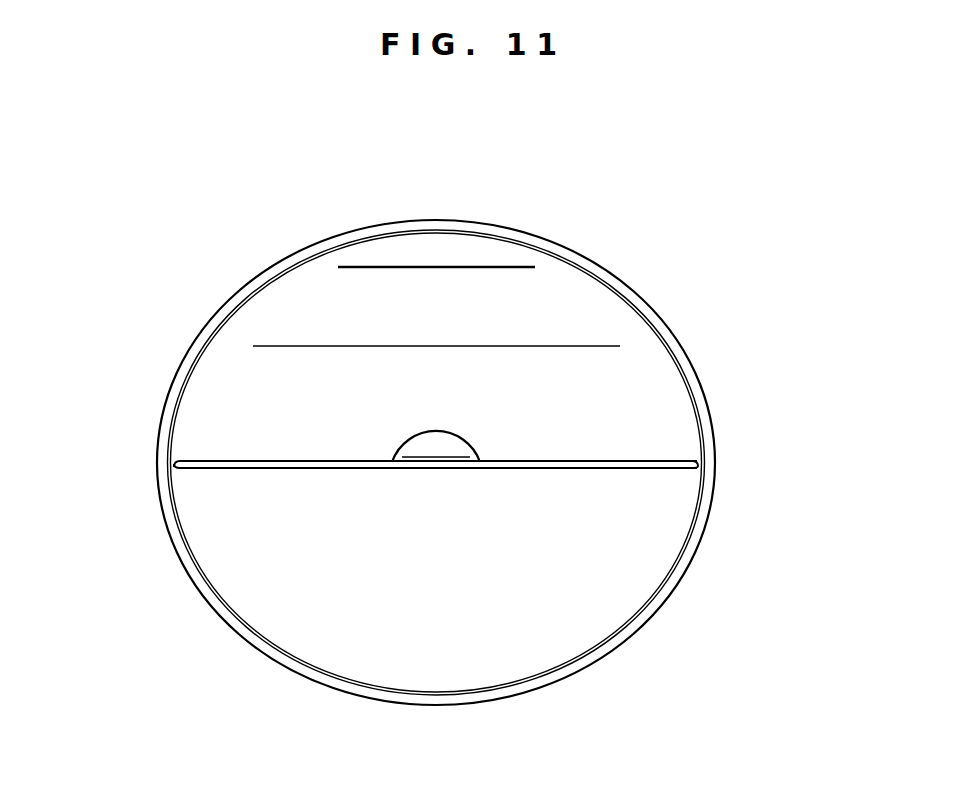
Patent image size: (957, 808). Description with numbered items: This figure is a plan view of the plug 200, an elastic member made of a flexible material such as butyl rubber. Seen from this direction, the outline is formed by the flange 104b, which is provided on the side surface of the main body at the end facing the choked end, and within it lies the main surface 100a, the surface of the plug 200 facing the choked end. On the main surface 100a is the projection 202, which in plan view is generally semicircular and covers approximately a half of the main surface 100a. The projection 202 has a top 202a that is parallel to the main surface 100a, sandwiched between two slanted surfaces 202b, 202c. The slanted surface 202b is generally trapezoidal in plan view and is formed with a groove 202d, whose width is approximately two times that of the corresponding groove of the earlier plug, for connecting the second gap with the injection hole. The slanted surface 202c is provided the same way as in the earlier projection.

The plug 200 is at (217, 286).
The flange 104b is at (643, 302).
The main surface 100a is at (272, 576).
The projection 202 is at (666, 425).
The top 202a is at (372, 282).
The slanted surface 202b is at (241, 412).
The slanted surface 202c is at (442, 255).
The groove 202d is at (458, 432).